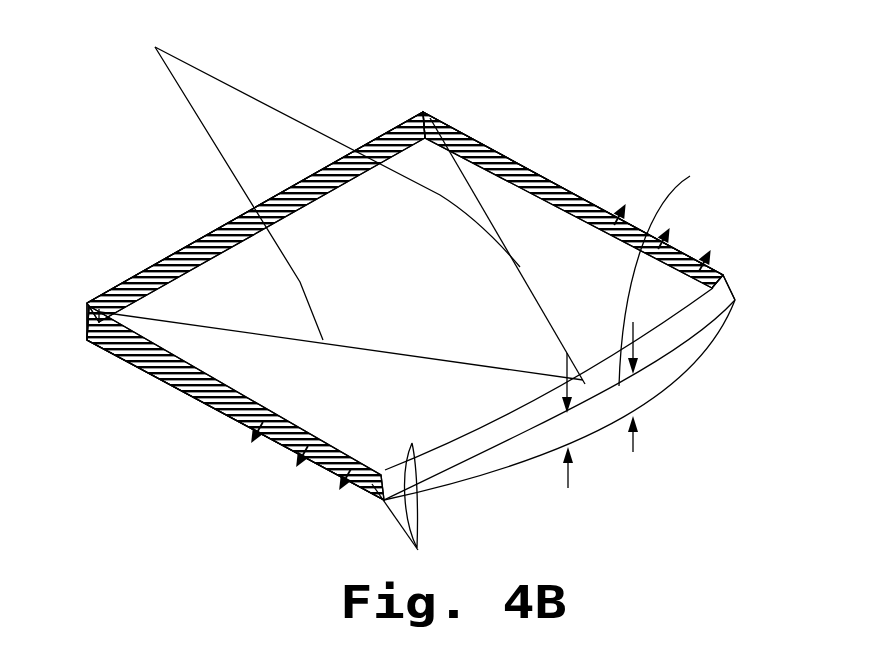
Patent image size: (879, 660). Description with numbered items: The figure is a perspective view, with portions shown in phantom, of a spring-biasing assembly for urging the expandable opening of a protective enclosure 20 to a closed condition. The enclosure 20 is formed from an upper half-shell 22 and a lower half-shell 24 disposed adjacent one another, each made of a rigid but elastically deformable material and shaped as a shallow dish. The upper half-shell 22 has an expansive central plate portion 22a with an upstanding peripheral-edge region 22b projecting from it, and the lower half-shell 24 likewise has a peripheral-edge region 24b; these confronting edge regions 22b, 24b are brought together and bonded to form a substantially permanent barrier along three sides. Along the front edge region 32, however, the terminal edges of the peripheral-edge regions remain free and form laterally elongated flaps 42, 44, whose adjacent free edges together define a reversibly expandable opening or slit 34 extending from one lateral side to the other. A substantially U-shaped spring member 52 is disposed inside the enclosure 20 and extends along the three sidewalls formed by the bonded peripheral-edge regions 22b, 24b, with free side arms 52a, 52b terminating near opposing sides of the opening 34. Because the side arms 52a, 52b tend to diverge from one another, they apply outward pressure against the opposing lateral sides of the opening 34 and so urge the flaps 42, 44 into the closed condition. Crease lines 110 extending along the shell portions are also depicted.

The enclosure 20 is at (163, 168).
The upper half-shell 22 is at (452, 105).
The central plate portion 22a is at (522, 228).
The peripheral-edge region 22b is at (87, 305).
The lower half-shell 24 is at (316, 480).
The peripheral-edge region 24b is at (86, 339).
The front edge region 32 is at (638, 432).
The expandable opening 34 is at (650, 393).
The flap 42 is at (643, 280).
The flap 44 is at (582, 440).
The spring member 52 is at (272, 192).
The side arm 52a is at (368, 488).
The side arm 52b is at (716, 273).
The crease lines 110 is at (342, 296).